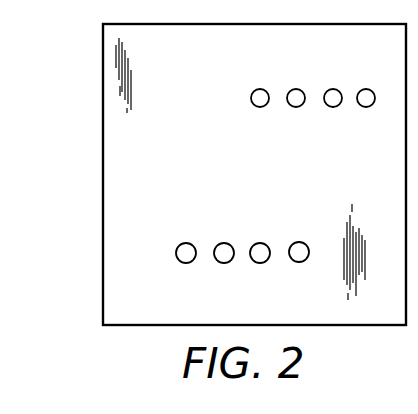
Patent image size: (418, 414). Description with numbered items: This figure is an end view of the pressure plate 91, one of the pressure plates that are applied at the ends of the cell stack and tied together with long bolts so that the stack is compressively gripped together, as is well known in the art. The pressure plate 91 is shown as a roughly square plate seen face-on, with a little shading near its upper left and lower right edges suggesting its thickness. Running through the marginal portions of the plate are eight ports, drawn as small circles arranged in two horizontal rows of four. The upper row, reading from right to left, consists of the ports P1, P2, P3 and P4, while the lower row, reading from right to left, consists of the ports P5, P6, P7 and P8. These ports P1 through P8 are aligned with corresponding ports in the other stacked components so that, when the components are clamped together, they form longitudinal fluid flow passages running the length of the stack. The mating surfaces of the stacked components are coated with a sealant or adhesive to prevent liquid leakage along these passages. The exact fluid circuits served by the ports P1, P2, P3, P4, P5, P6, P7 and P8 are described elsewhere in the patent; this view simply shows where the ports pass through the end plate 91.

The pressure plate 91 is at (103, 100).
The port P1 is at (362, 107).
The port P2 is at (335, 107).
The port P3 is at (290, 105).
The port P4 is at (251, 101).
The port P5 is at (300, 262).
The port P6 is at (259, 263).
The port P7 is at (219, 262).
The port P8 is at (178, 261).